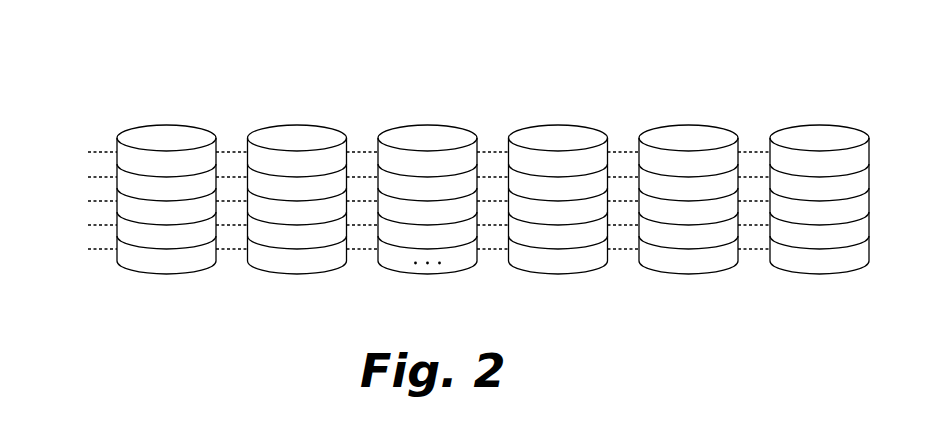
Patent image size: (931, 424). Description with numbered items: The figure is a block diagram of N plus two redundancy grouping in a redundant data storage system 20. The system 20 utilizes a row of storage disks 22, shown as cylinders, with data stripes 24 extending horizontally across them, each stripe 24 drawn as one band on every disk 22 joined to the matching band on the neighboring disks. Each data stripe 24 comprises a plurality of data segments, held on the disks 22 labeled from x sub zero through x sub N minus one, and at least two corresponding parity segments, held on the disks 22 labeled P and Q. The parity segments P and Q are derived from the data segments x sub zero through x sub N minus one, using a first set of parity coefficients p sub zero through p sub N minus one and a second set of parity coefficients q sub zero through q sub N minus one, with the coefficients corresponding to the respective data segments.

The redundant data storage system 20 is at (475, 55).
The storage disk 22 is at (124, 110).
The data stripe 24 is at (417, 201).